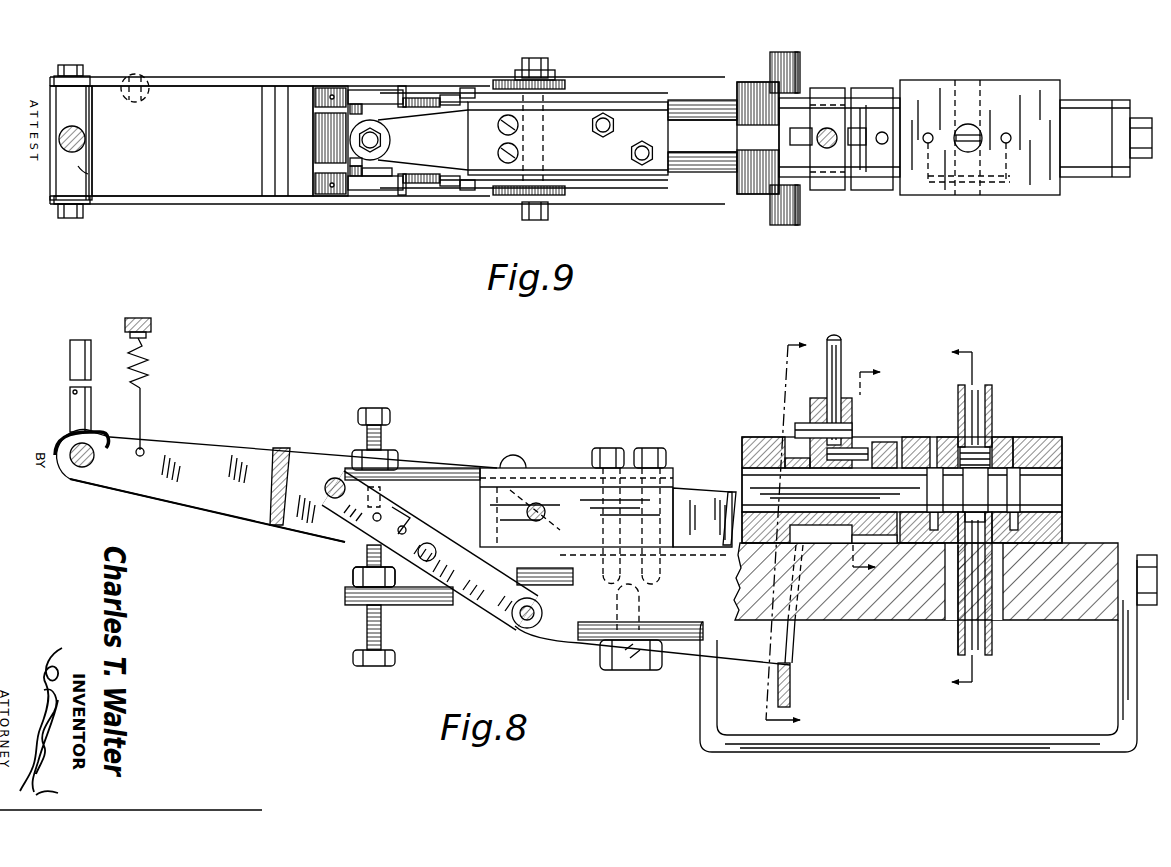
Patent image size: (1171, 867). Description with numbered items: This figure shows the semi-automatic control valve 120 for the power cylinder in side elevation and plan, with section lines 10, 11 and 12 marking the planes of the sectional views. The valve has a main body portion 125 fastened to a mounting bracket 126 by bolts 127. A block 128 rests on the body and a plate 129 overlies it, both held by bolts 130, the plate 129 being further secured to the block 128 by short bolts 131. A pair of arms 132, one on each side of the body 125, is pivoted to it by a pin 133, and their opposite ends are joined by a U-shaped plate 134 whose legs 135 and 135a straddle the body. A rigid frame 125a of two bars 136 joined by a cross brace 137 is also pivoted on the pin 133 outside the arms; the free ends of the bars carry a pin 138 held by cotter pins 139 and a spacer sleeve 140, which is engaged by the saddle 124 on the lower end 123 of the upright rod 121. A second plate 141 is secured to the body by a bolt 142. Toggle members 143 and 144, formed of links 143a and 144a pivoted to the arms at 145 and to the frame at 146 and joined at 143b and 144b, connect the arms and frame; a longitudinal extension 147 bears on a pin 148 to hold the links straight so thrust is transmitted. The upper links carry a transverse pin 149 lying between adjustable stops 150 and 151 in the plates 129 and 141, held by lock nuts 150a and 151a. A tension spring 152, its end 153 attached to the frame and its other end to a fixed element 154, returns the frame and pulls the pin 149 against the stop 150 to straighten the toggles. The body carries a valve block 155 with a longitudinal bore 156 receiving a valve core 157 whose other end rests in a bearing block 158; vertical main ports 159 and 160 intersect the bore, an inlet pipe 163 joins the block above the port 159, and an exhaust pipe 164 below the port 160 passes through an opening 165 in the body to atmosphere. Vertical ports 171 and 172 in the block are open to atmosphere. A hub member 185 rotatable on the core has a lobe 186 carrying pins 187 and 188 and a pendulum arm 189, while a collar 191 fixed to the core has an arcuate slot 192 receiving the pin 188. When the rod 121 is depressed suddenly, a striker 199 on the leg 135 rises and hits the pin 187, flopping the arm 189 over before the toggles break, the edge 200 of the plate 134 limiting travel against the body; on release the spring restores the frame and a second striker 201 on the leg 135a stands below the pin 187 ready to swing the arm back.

In FIG. 8, the section line 10- 10 is at (797, 522).
In FIG. 8, the section line 11- 11 is at (876, 463).
In FIG. 8, the section line 12- 12 is at (960, 515).
In FIG. 9, the power cylinder control valve 120 is at (738, 192).
In FIG. 8, the power cylinder control valve 120 is at (742, 440).
In FIG. 8, the upright rod 121 is at (83, 340).
In FIG. 9, the lower end 123 is at (86, 150).
In FIG. 8, the lower end 123 is at (90, 416).
In FIG. 9, the saddle 124 is at (90, 172).
In FIG. 8, the saddle 124 is at (101, 436).
In FIG. 9, the main body portion 125 is at (1070, 177).
In FIG. 8, the main body portion 125 is at (870, 622).
In FIG. 9, the rigid frame 125a is at (165, 77).
In FIG. 8, the rigid frame 125a is at (195, 448).
In FIG. 8, the mounting bracket 126 is at (990, 745).
In FIG. 8, the bolts 127 is at (622, 672).
In FIG. 8, the block 128 is at (672, 495).
In FIG. 9, the plate 129 is at (570, 108).
In FIG. 8, the plate 129 is at (478, 468).
In FIG. 9, the bolts 130 is at (608, 137).
In FIG. 8, the bolts 130 is at (606, 448).
In FIG. 9, the relatively short bolts 131 is at (498, 125).
In FIG. 8, the relatively short bolts 131 is at (514, 457).
In FIG. 9, the arms 132 is at (620, 92).
In FIG. 8, the arms 132 is at (560, 643).
In FIG. 9, the pin 133 is at (546, 212).
In FIG. 8, the pin 133 is at (530, 520).
In FIG. 8, the U-shaped plate 134 is at (790, 696).
In FIG. 9, the leg 135 is at (786, 55).
In FIG. 9, the leg 135a is at (783, 225).
In FIG. 9, the bars 136 is at (235, 77).
In FIG. 8, the bars 136 is at (193, 526).
In FIG. 9, the cross brace 137 is at (268, 130).
In FIG. 8, the cross brace 137 is at (278, 505).
In FIG. 9, the pin 138 is at (78, 65).
In FIG. 8, the pin 138 is at (95, 462).
In FIG. 9, the cotter pins 139 is at (90, 77).
In FIG. 8, the sleeve 140 is at (88, 480).
In FIG. 8, the second plate 141 is at (428, 605).
In FIG. 8, the bolt 142 is at (543, 630).
In FIG. 9, the toggle member 143 is at (440, 188).
In FIG. 8, the toggle member 143 is at (345, 530).
In FIG. 9, the links 143a is at (356, 182).
In FIG. 8, the links 143a is at (480, 608).
In FIG. 9, the pivotal connection 143b is at (420, 188).
In FIG. 9, the toggle member 144 is at (418, 88).
In FIG. 9, the links 144a is at (448, 98).
In FIG. 9, the pivotal connection 144b is at (447, 95).
In FIG. 8, the pivotal connection 145 is at (520, 620).
In FIG. 9, the pivot pin 146 is at (320, 198).
In FIG. 8, the pivot pin 146 is at (330, 478).
In FIG. 9, the longitudinal extension 147 is at (372, 92).
In FIG. 9, the pin 148 is at (368, 200).
In FIG. 8, the pin 148 is at (420, 522).
In FIG. 9, the transverse pin 149 is at (368, 100).
In FIG. 8, the transverse pin 149 is at (350, 525).
In FIG. 9, the stop 150 is at (391, 141).
In FIG. 8, the stop 150 is at (395, 495).
In FIG. 8, the lock nut 150a is at (395, 455).
In FIG. 8, the stop 151 is at (355, 562).
In FIG. 8, the lock nut 151a is at (352, 592).
In FIG. 9, the tension spring 152 is at (151, 95).
In FIG. 8, the tension spring 152 is at (150, 356).
In FIG. 8, the spring end 153 is at (144, 448).
In FIG. 8, the fixed element 154 is at (151, 327).
In FIG. 9, the valve block 155 is at (1040, 95).
In FIG. 8, the valve block 155 is at (1062, 440).
In FIG. 8, the longitudinal bore 156 is at (1050, 476).
In FIG. 8, the valve core 157 is at (1045, 500).
In FIG. 9, the bearing block 158 is at (745, 82).
In FIG. 8, the bearing block 158 is at (748, 437).
In FIG. 9, the main port 159 is at (968, 124).
In FIG. 8, the main port 159 is at (982, 440).
In FIG. 8, the main port 160 is at (977, 531).
In FIG. 8, the inlet pipe 163 is at (992, 395).
In FIG. 8, the exhaust pipe 164 is at (993, 640).
In FIG. 8, the opening 165 is at (950, 612).
In FIG. 8, the vertical port 171 is at (1005, 450).
In FIG. 8, the vertical port 172 is at (920, 437).
In FIG. 8, the hub member 185 is at (800, 458).
In FIG. 9, the lobe 186 is at (825, 95).
In FIG. 8, the lobe 186 is at (820, 405).
In FIG. 9, the pin 187 is at (792, 136).
In FIG. 8, the pin 187 is at (798, 423).
In FIG. 9, the pin 188 is at (858, 128).
In FIG. 8, the pin 188 is at (860, 448).
In FIG. 9, the pendulum arm 189 is at (836, 130).
In FIG. 8, the pendulum arm 189 is at (841, 342).
In FIG. 9, the collar 191 is at (890, 92).
In FIG. 8, the collar 191 is at (880, 445).
In FIG. 9, the arcuate recess 192 is at (868, 172).
In FIG. 9, the striker 199 is at (800, 66).
In FIG. 8, the edge 200 is at (795, 658).
In FIG. 9, the second striker 201 is at (802, 208).